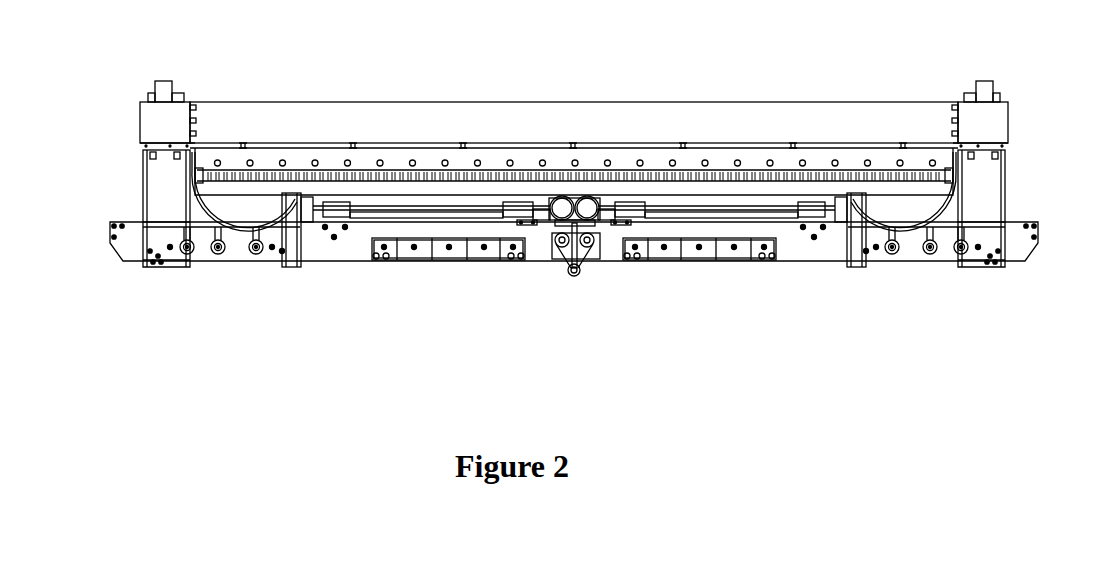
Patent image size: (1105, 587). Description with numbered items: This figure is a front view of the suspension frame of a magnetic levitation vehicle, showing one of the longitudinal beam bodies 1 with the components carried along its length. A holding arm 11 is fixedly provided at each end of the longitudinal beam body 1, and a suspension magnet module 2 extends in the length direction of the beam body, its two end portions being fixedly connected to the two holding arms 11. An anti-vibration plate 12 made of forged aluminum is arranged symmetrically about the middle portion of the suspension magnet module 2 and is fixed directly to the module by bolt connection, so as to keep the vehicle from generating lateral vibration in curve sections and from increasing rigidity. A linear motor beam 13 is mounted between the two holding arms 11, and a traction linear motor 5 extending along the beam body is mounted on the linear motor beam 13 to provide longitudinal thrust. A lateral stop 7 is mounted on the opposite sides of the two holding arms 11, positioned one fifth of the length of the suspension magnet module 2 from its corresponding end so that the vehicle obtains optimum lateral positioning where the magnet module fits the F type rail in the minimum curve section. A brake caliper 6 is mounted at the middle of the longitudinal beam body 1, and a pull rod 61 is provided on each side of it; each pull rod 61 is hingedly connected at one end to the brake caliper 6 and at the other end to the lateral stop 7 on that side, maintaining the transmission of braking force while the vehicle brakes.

The longitudinal beam body 1 is at (332, 118).
The suspension magnet module 2 is at (132, 243).
The traction linear motor 5 is at (529, 153).
The brake caliper 6 is at (595, 218).
The lateral stop 7 is at (290, 262).
The holding arm 11 is at (162, 205).
The anti-vibration plate 12 is at (393, 252).
The linear motor beam 13 is at (672, 133).
The pull rod 61 is at (488, 207).